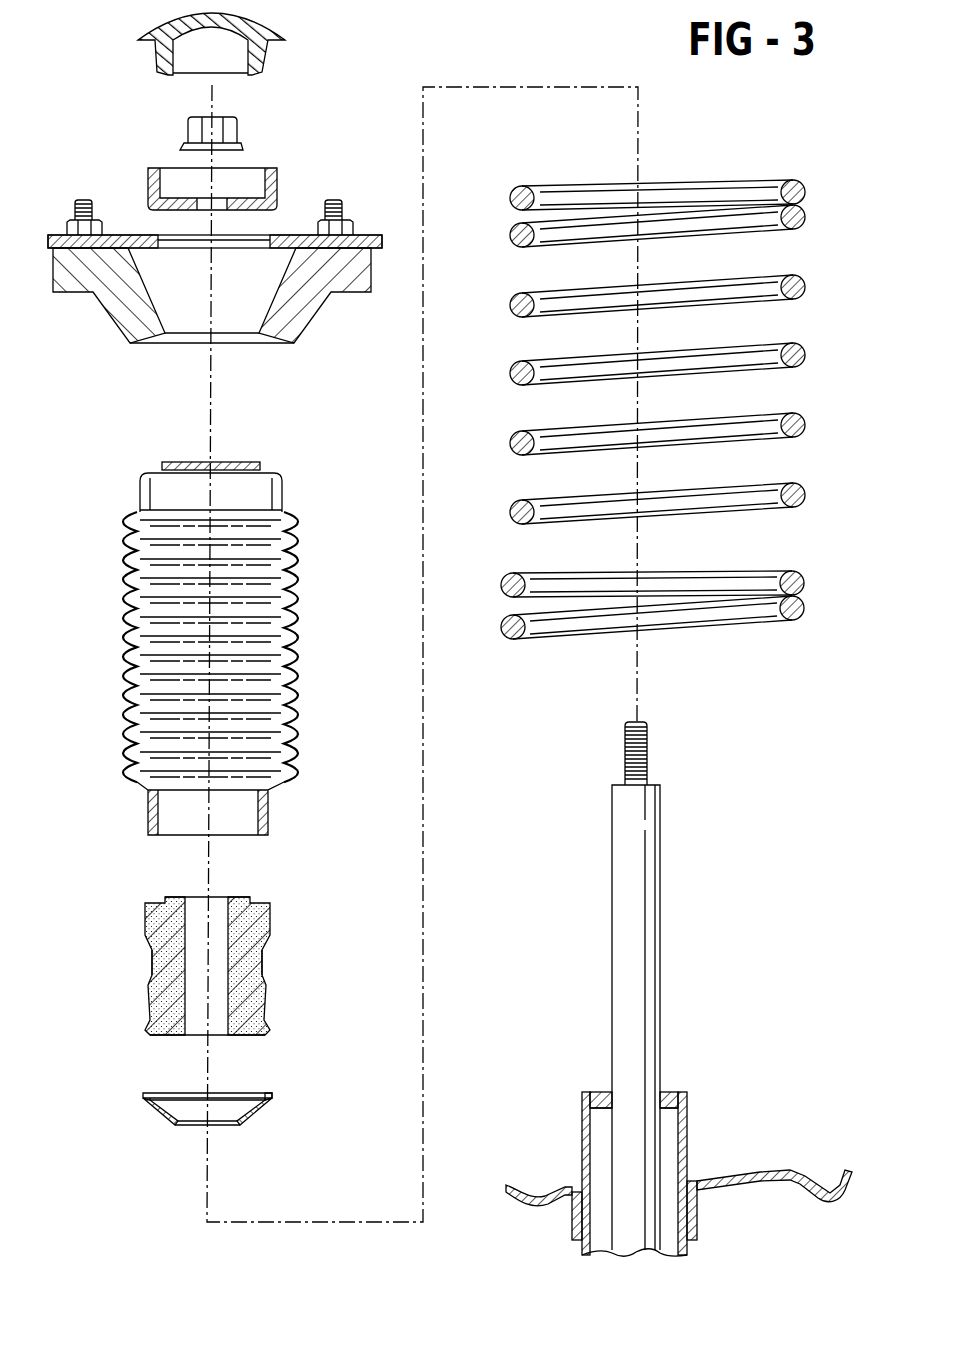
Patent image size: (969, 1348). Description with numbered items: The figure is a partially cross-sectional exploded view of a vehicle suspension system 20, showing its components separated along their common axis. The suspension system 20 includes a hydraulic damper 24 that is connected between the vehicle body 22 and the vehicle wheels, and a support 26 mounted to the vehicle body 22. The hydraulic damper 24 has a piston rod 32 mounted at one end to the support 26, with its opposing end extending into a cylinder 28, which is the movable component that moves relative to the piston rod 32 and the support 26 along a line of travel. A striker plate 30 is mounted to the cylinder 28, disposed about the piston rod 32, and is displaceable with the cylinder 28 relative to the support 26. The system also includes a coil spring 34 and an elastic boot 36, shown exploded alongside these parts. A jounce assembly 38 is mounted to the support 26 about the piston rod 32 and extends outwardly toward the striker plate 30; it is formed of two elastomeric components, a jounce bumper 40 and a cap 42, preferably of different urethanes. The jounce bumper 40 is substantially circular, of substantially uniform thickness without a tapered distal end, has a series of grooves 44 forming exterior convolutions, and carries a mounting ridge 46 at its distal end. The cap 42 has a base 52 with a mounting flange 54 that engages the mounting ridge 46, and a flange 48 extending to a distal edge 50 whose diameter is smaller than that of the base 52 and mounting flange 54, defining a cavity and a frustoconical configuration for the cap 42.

The suspension system 20 is at (140, 961).
The vehicle body 22 is at (287, 240).
The hydraulic damper 24 is at (679, 989).
The support 26 is at (112, 283).
The cylinder 28 is at (653, 1143).
The striker plate 30 is at (600, 1092).
The piston rod 32 is at (636, 905).
The coil spring 34 is at (766, 418).
The elastic boot 36 is at (252, 497).
The jounce assembly 38 is at (271, 1010).
The jounce bumper 40 is at (216, 987).
The cap 42 is at (211, 1118).
The grooves 44 is at (258, 963).
The mounting ridge 46 is at (145, 1032).
The flange 48 is at (262, 1115).
The distal edge 50 is at (236, 1130).
The base 52 is at (272, 1095).
The mounting flange 54 is at (152, 1093).